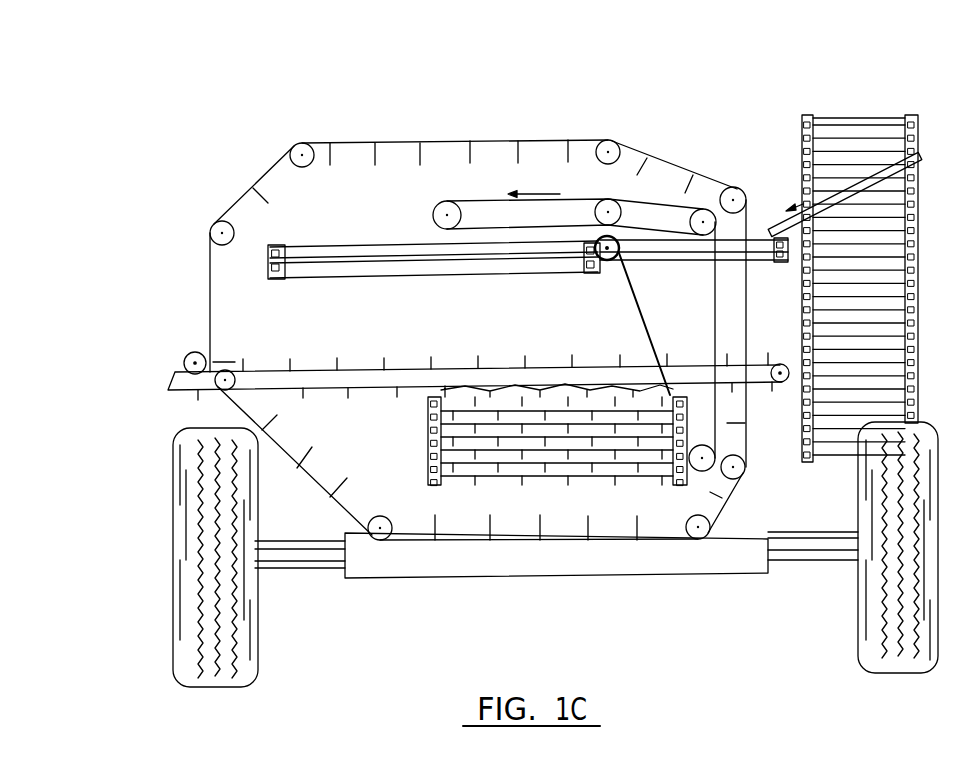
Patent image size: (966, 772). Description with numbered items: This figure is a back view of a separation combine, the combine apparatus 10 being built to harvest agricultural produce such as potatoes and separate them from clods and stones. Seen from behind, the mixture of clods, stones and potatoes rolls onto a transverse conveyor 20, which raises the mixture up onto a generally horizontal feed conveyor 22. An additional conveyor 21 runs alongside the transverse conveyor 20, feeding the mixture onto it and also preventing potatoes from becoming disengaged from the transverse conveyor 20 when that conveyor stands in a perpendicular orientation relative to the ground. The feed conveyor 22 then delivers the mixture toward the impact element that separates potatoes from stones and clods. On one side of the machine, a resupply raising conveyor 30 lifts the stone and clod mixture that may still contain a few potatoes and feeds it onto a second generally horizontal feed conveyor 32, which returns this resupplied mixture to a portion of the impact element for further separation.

The combine apparatus 10 is at (214, 143).
The transverse conveyor 20 is at (445, 140).
The additional conveyor 21 is at (580, 200).
The feed conveyor 22 is at (372, 245).
The resupply raising conveyor 30 is at (827, 120).
The feed conveyor 32 is at (758, 248).